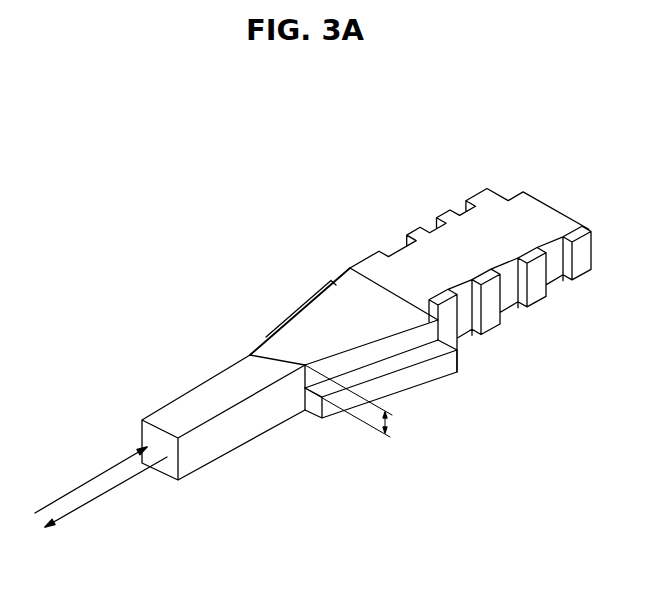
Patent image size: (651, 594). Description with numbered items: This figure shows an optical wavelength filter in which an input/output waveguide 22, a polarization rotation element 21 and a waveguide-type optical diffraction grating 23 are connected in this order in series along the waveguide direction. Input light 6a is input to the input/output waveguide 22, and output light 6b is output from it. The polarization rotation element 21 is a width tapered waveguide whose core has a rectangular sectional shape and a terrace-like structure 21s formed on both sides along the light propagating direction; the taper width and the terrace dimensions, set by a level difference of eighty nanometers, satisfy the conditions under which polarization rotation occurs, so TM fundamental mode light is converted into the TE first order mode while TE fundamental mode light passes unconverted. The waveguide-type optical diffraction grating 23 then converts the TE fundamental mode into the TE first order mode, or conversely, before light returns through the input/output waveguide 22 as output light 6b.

The input light 6a is at (93, 477).
The output light 6b is at (107, 490).
The polarization rotation element 21 is at (307, 330).
The terrace-like structure 21s is at (418, 375).
The input/output waveguide 22 is at (205, 405).
The waveguide-type optical diffraction grating 23 is at (478, 242).